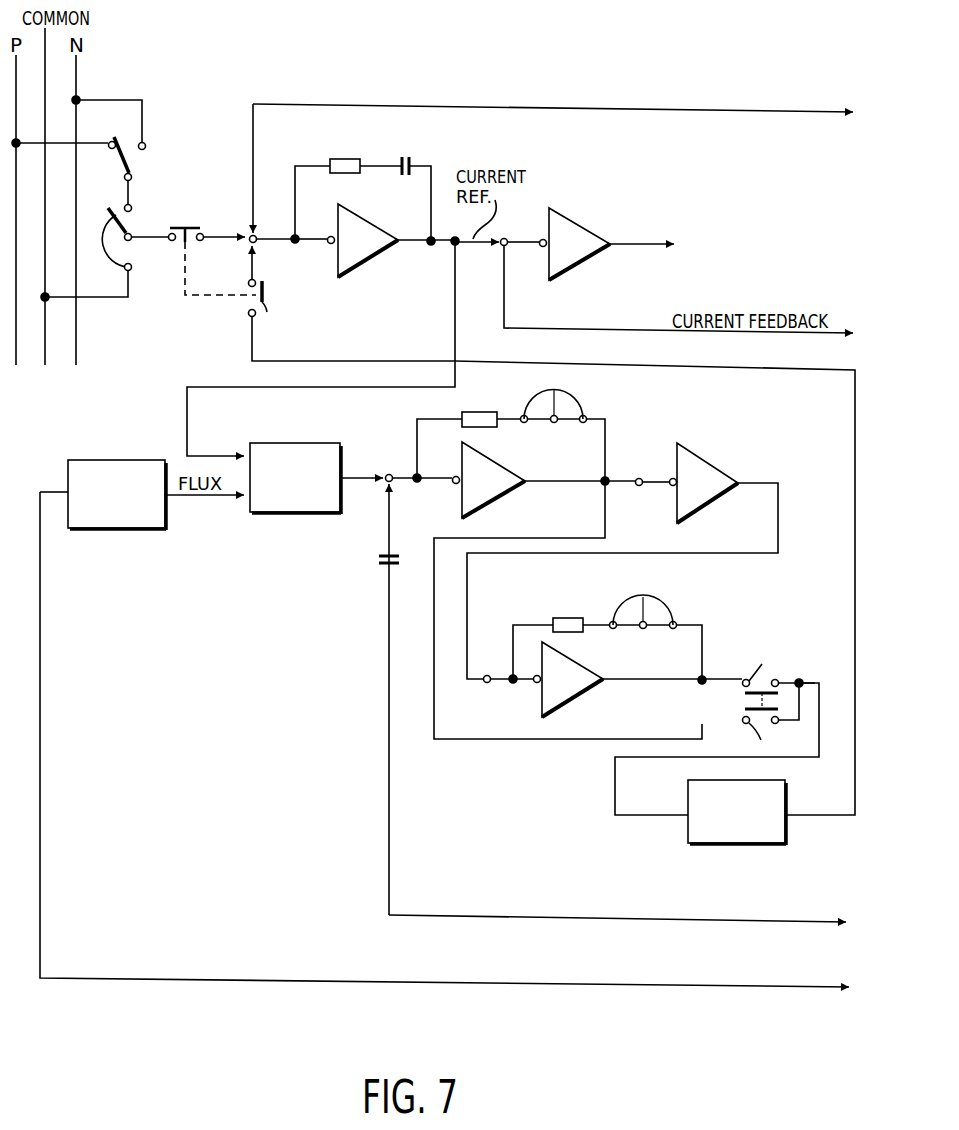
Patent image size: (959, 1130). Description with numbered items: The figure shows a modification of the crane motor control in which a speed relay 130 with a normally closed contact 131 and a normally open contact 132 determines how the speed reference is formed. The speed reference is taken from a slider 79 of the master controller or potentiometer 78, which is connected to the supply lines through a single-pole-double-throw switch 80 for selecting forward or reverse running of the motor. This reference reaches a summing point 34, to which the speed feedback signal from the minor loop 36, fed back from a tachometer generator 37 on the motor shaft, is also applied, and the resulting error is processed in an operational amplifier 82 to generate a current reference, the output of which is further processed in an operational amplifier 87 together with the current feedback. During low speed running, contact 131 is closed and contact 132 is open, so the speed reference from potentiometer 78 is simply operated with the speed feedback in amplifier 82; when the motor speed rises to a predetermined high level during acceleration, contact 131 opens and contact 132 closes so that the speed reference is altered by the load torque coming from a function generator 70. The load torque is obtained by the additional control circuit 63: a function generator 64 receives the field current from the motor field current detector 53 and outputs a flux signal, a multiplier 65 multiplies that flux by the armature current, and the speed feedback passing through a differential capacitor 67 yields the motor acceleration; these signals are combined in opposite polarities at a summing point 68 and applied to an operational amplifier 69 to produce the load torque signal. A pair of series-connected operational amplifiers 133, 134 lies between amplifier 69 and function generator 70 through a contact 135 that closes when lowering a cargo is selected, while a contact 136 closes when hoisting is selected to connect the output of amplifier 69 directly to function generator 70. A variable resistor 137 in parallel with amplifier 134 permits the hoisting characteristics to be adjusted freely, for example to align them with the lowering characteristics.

The summing point 34 is at (249, 244).
The minor loop 36 is at (766, 116).
The tachometer generator 37 is at (617, 906).
The motor field current detector 53 is at (444, 739).
The control circuit 63 is at (492, 404).
The function generator 64 is at (86, 460).
The multiplier 65 is at (315, 443).
The differential capacitor 67 is at (386, 556).
The summing point 68 is at (402, 462).
The operational amplifier 69 is at (521, 457).
The function generator 70 is at (688, 790).
The master controller or potentiometer 78 is at (118, 205).
The slider 79 is at (128, 228).
The single-pole-double-throw switch 80 is at (131, 160).
The operational amplifier 82 is at (356, 270).
The operational amplifier 87 is at (563, 273).
The speed relay 130 is at (185, 290).
The normally closed contact 131 is at (187, 226).
The normally open contact 132 is at (265, 305).
The operational amplifier 133 is at (733, 466).
The operational amplifier 134 is at (577, 656).
The contact 135 is at (762, 678).
The contact 136 is at (764, 725).
The variable resistor 137 is at (627, 599).